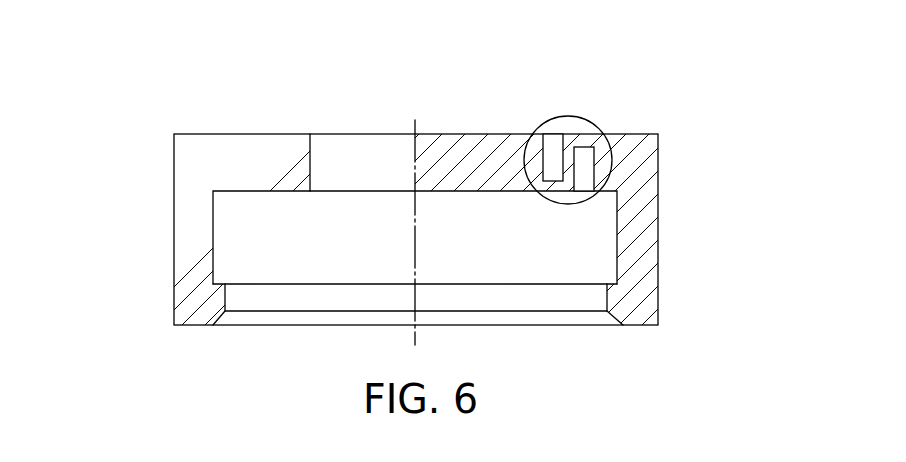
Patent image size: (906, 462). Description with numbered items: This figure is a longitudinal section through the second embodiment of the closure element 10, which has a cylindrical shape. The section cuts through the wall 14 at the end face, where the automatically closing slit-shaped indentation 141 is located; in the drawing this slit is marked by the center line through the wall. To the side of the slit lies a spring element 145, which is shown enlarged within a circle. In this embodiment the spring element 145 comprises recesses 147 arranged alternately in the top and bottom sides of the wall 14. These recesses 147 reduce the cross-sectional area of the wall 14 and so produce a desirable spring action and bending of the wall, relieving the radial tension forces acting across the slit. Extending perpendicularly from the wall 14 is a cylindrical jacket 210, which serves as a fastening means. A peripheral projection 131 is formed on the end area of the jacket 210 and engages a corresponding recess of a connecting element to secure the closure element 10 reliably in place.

The closure element 10 is at (690, 202).
The wall 14 is at (248, 134).
The slit-shaped indentation 141 is at (415, 134).
The spring element 145 is at (573, 116).
The recesses 147 is at (588, 191).
The peripheral projection 131 is at (218, 295).
The cylindrical jacket 210 is at (174, 227).